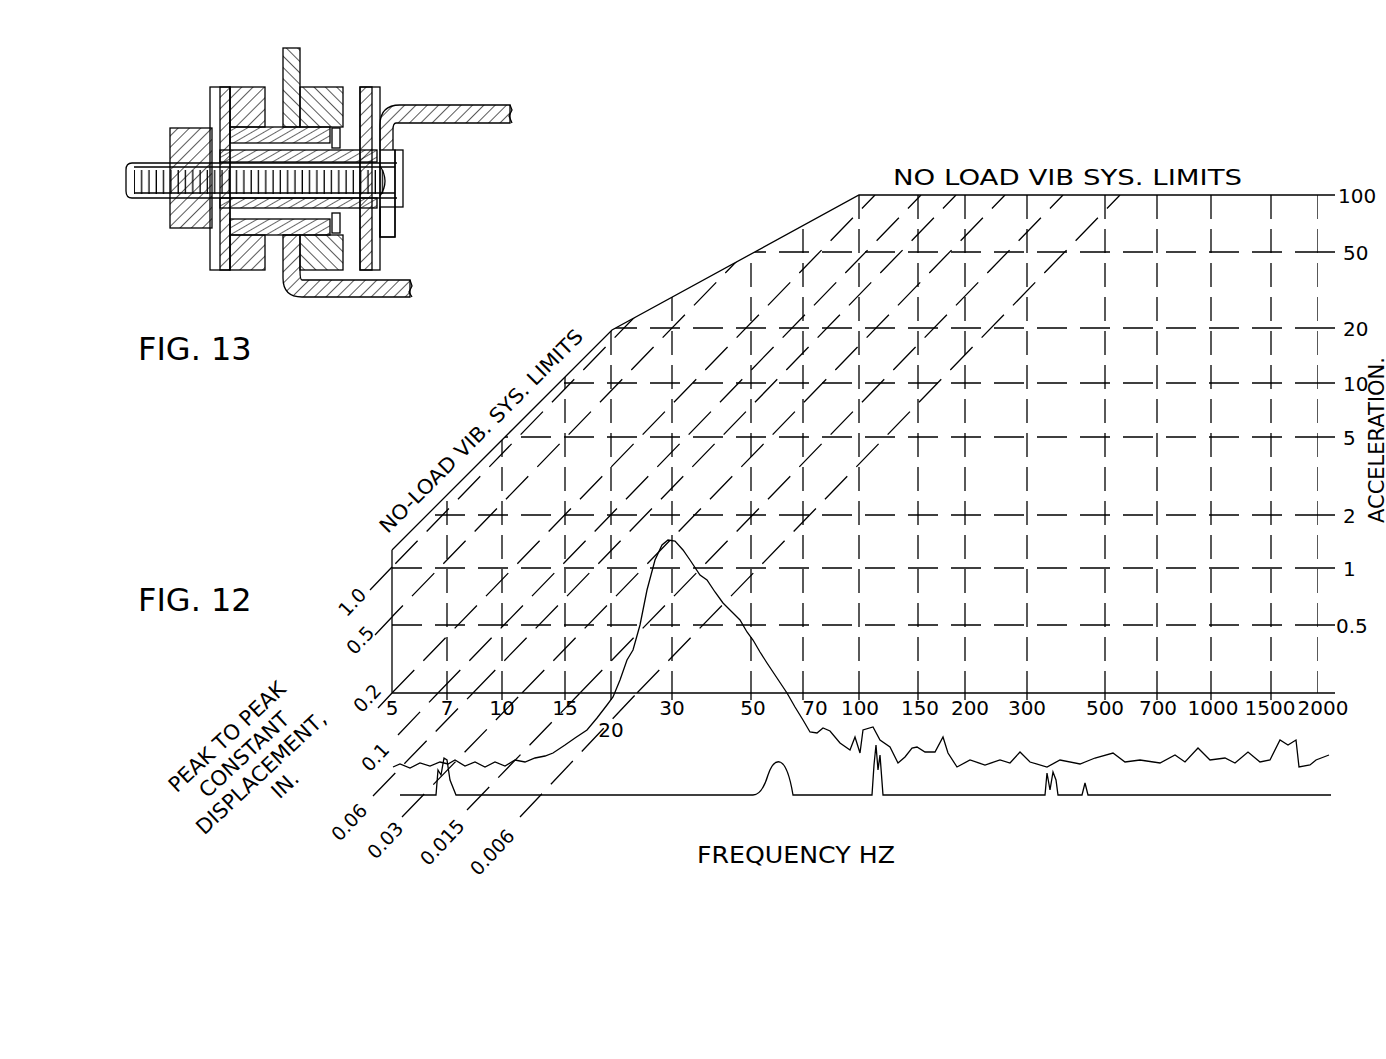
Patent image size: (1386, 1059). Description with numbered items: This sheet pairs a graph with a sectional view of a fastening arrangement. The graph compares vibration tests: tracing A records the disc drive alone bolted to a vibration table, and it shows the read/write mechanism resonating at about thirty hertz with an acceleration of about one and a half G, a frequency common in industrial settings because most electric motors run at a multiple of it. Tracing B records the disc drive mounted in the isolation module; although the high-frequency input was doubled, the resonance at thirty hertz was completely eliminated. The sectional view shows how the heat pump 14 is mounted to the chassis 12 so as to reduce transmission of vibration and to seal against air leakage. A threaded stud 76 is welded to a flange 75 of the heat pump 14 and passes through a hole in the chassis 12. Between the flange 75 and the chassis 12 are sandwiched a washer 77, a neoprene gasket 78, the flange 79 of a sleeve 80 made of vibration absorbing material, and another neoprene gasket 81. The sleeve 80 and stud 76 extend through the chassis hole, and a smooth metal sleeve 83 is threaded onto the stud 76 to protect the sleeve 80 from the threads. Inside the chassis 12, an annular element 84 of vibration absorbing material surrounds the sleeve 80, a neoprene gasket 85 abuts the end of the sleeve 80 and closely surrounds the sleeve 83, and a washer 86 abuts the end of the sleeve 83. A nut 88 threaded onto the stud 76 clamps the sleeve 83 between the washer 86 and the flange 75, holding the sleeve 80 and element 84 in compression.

In FIG. 13, the chassis 12 is at (362, 298).
In FIG. 13, the heat pump 14 is at (505, 123).
In FIG. 13, the flange 75 is at (395, 230).
In FIG. 13, the threaded stud 76 is at (403, 173).
In FIG. 13, the washer 77 is at (387, 106).
In FIG. 13, the neoprene gasket 78 is at (364, 87).
In FIG. 13, the flange of sleeve 79 is at (327, 87).
In FIG. 13, the sleeve 80 is at (234, 124).
In FIG. 13, the neoprene gasket 81 is at (297, 84).
In FIG. 13, the smooth metal sleeve 83 is at (245, 265).
In FIG. 13, the annular element 84 is at (240, 84).
In FIG. 13, the neoprene gasket 85 is at (222, 263).
In FIG. 13, the washer 86 is at (212, 88).
In FIG. 13, the nut 88 is at (177, 222).
In FIG. 12, the tracing A is at (752, 605).
In FIG. 12, the tracing B is at (1012, 797).